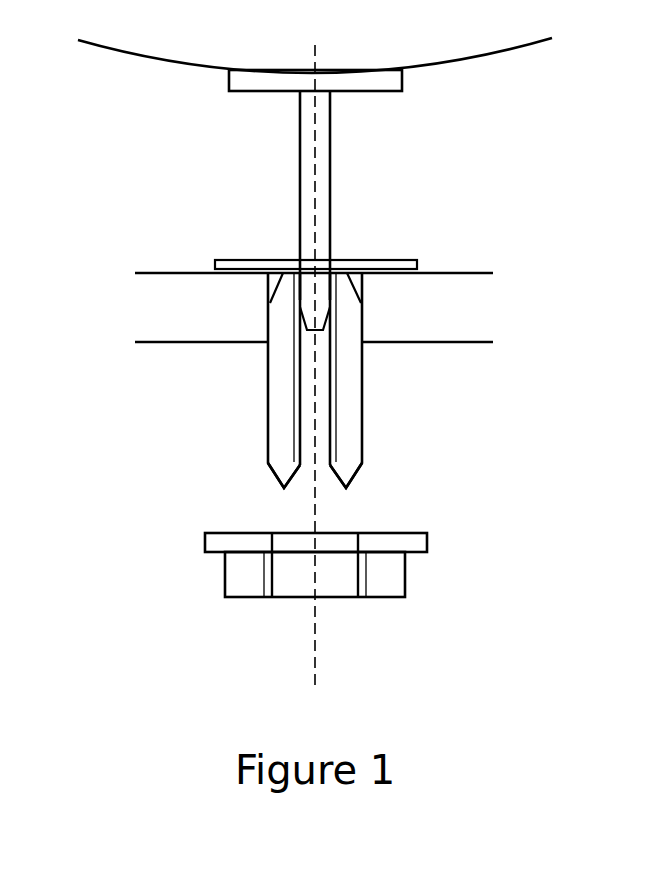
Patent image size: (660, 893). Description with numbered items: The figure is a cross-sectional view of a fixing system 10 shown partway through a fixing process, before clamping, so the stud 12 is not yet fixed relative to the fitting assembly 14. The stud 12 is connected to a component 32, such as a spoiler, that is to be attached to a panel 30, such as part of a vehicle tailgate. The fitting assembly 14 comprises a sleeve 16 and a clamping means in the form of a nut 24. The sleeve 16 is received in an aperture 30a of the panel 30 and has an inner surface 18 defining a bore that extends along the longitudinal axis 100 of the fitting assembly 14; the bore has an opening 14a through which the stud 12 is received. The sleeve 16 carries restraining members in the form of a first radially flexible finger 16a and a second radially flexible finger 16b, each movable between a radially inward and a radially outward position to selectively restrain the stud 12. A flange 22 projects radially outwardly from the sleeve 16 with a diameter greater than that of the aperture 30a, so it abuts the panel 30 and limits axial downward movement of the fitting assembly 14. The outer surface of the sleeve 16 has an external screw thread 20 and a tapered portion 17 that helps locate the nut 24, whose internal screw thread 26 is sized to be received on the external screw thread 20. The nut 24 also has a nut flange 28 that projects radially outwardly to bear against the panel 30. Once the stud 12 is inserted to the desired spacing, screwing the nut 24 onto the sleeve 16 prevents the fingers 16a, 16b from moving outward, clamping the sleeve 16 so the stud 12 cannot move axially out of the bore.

The fixing system 10 is at (512, 157).
The stud 12 is at (331, 202).
The fitting assembly 14 is at (340, 363).
The opening 14a is at (331, 262).
The sleeve 16 is at (267, 402).
The first radially flexible finger 16a is at (280, 450).
The second radially flexible finger 16b is at (350, 390).
The tapered portion 17 is at (355, 475).
The inner surface 18 is at (302, 462).
The external screw thread 20 is at (362, 455).
The flange 22 is at (417, 267).
The nut 24 is at (405, 583).
The internal screw thread 26 is at (272, 583).
The nut flange 28 is at (420, 543).
The panel 30 is at (165, 328).
The aperture 30a is at (267, 292).
The component 32 is at (177, 53).
The longitudinal axis 100 is at (317, 658).